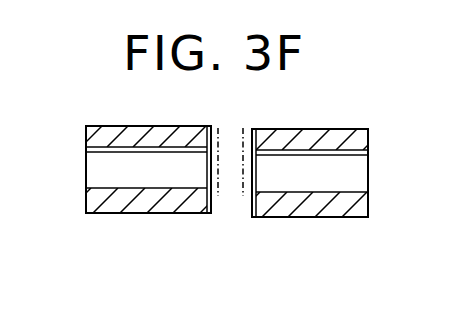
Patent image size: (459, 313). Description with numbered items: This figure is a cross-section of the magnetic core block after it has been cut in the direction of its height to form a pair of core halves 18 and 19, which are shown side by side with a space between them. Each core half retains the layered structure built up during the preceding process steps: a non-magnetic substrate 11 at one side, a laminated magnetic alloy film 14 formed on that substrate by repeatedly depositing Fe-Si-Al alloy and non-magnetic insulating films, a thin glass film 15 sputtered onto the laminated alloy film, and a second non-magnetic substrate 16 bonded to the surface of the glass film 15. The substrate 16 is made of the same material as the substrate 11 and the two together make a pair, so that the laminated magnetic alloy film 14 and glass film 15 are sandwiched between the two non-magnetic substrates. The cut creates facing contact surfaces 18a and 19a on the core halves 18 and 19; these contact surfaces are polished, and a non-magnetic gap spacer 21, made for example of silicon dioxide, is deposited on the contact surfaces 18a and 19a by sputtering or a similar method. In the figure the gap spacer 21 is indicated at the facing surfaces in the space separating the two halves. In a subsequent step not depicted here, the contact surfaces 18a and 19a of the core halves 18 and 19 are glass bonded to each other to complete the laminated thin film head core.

The non-magnetic substrate 11 is at (356, 207).
The laminated magnetic alloy film 14 is at (123, 221).
The glass film 15 is at (88, 156).
The non-magnetic substrate 16 is at (353, 143).
The core half 18 is at (125, 219).
The contact surface 18a is at (218, 196).
The core half 19 is at (315, 196).
The contact surface 19a is at (243, 196).
The non-magnetic gap spacer 21 is at (206, 179).